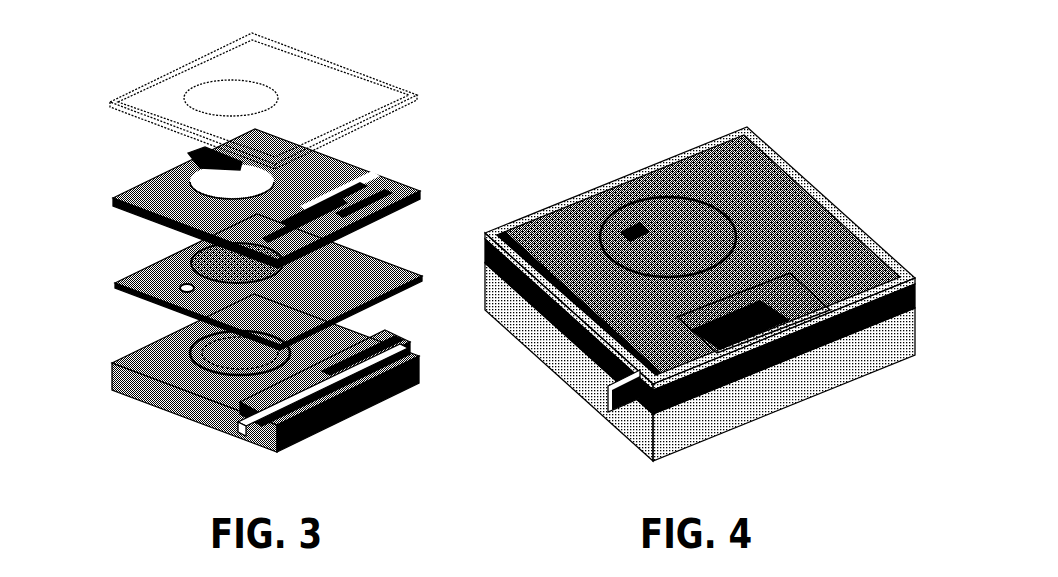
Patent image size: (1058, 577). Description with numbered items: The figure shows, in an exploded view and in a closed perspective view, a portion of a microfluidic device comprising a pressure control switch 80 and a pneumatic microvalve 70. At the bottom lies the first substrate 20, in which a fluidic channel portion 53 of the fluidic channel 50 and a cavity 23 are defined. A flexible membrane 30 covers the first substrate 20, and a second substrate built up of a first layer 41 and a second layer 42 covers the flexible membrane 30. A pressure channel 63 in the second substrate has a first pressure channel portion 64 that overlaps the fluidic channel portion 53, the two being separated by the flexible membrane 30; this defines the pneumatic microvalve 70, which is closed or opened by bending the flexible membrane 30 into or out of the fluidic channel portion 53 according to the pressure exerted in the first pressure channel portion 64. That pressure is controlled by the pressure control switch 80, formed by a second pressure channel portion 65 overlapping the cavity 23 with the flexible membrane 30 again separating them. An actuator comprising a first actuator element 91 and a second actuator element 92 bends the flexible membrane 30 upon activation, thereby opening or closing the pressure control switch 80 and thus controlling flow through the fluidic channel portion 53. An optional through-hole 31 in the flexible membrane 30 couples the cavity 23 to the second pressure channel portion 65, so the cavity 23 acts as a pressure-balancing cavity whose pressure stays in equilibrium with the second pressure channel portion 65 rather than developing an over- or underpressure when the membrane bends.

In FIG. 3, the first substrate 20 is at (120, 381).
In FIG. 4, the first substrate 20 is at (917, 342).
In FIG. 3, the cavity 23 is at (189, 345).
In FIG. 3, the flexible membrane 30 is at (120, 287).
In FIG. 3, the through-hole 31 is at (185, 278).
In FIG. 3, the first layer 41 is at (119, 199).
In FIG. 4, the first layer 41 is at (917, 304).
In FIG. 3, the second layer 42 is at (120, 109).
In FIG. 4, the second layer 42 is at (917, 283).
In FIG. 3, the fluidic channel 50 is at (233, 431).
In FIG. 4, the fluidic channel 50 is at (613, 404).
In FIG. 3, the fluidic channel portion 53 is at (330, 350).
In FIG. 3, the pressure channel 63 is at (176, 157).
In FIG. 4, the pressure channel 63 is at (601, 164).
In FIG. 3, the first pressure channel portion 64 is at (331, 190).
In FIG. 3, the second pressure channel portion 65 is at (246, 168).
In FIG. 4, the pneumatic microvalve 70 is at (817, 259).
In FIG. 4, the pressure control switch 80 is at (742, 184).
In FIG. 3, the first actuator element 91 is at (202, 262).
In FIG. 3, the second actuator element 92 is at (262, 97).